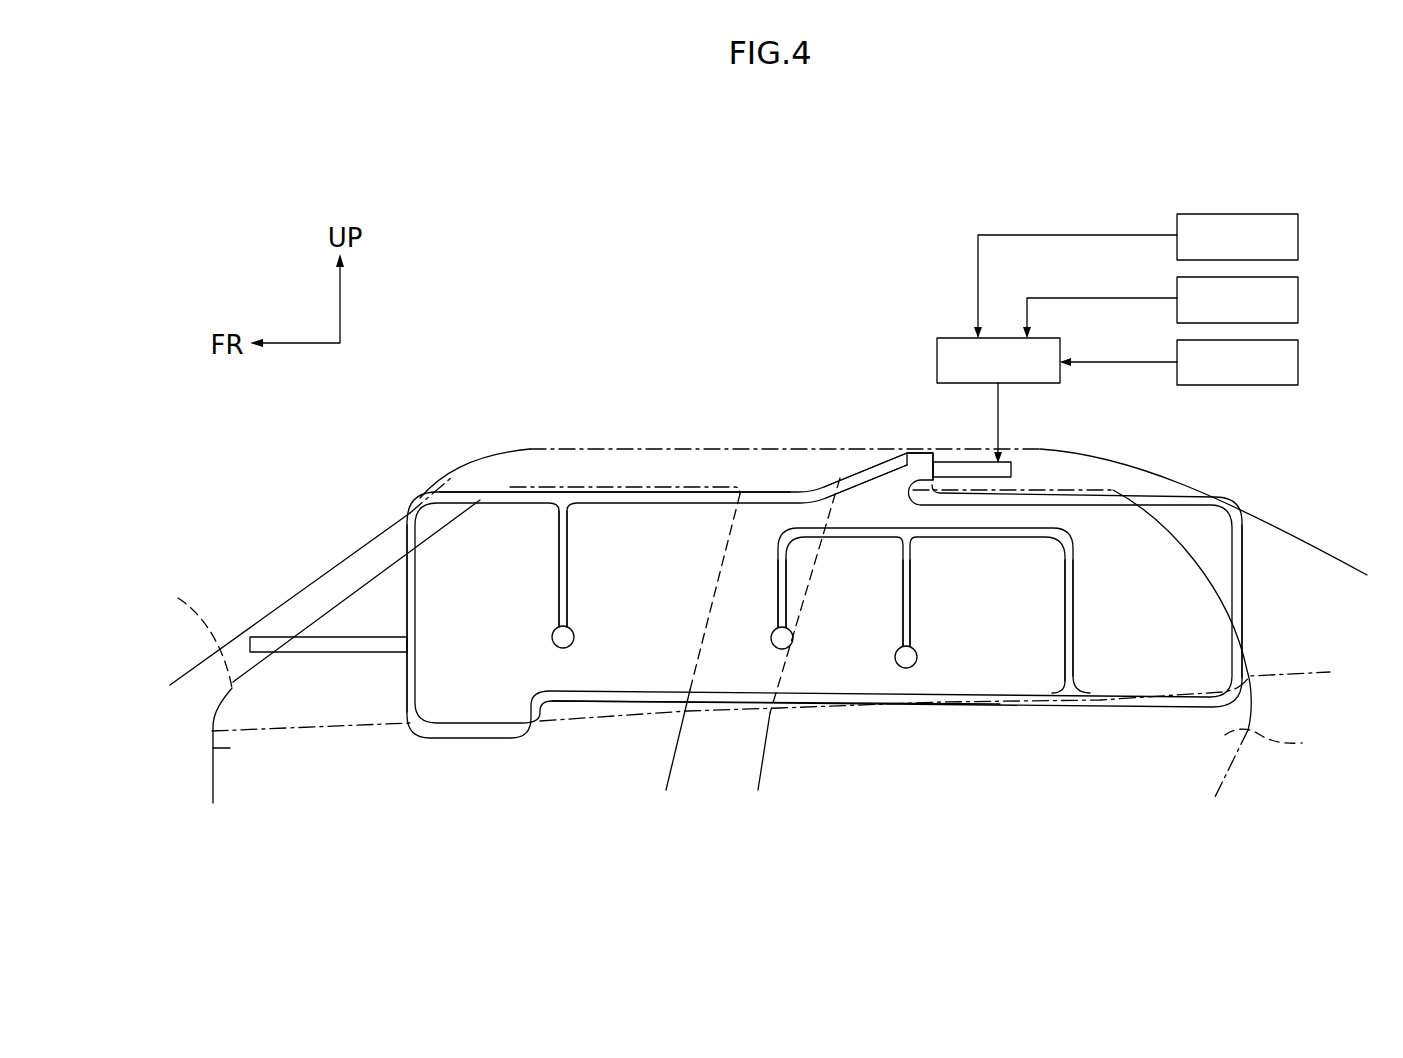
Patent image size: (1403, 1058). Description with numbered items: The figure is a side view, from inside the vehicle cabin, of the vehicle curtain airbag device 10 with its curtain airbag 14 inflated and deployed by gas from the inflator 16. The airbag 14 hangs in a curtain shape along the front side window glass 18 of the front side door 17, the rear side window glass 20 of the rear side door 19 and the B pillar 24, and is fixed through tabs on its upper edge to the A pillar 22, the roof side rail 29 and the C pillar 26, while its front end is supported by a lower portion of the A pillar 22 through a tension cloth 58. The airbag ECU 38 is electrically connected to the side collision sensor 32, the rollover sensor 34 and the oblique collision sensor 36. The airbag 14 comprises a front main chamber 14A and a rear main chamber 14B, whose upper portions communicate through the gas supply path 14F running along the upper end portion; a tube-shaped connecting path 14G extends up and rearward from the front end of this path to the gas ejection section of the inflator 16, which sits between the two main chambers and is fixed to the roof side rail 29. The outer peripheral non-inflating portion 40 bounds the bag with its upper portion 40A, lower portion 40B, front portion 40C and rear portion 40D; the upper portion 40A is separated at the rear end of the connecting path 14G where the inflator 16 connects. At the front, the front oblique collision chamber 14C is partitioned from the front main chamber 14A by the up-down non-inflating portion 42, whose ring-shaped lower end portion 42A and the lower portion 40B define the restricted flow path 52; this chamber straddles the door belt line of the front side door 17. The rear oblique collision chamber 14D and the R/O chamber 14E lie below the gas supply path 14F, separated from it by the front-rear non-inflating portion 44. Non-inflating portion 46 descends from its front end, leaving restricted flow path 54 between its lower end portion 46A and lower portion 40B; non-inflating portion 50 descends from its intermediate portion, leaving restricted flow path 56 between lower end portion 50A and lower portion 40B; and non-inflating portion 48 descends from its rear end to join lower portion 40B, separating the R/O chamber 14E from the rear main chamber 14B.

The vehicle curtain airbag device 10 is at (838, 228).
The curtain airbag 14 is at (767, 477).
The front main chamber 14A is at (657, 642).
The rear main chamber 14B is at (1140, 652).
The front oblique collision chamber 14C is at (473, 677).
The rear oblique collision chamber 14D is at (850, 640).
The R/O chamber 14E is at (990, 652).
The gas supply path 14F is at (857, 505).
The connecting path 14G is at (908, 477).
The inflator 16 is at (1013, 467).
The front side door 17 is at (198, 758).
The front side window glass 18 is at (186, 693).
The rear side door 19 is at (1128, 643).
The rear side window glass 20 is at (792, 694).
The A pillar 22 is at (320, 573).
The B pillar 24 is at (712, 620).
The C pillar 26 is at (1277, 525).
The roof side rail 29 is at (731, 442).
The side collision sensor 32 is at (1300, 235).
The rollover sensor 34 is at (1300, 298).
The oblique collision sensor 36 is at (1300, 360).
The airbag ECU 38 is at (962, 338).
The outer peripheral non-inflating portion 40 is at (1247, 598).
The upper portion of outer peripheral non-inflating portion 40A is at (653, 502).
The lower portion of outer peripheral non-inflating portion 40B is at (723, 697).
The front portion of outer peripheral non-inflating portion 40C is at (425, 605).
The rear portion of outer peripheral non-inflating portion 40D is at (1242, 558).
The non-inflating portion 42 is at (560, 578).
The lower end portion of non-inflating portion 42 42A is at (553, 638).
The non-inflating portion 44 is at (1000, 540).
The non-inflating portion 46 is at (787, 573).
The lower end portion of non-inflating portion 46 46A is at (785, 637).
The non-inflating portion 48 is at (1073, 600).
The non-inflating portion 50 is at (912, 588).
The lower end portion of non-inflating portion 50 50A is at (915, 650).
The restricted flow path 52 is at (565, 667).
The restricted flow path 54 is at (797, 663).
The restricted flow path 56 is at (913, 673).
The tension cloth 58 is at (323, 638).